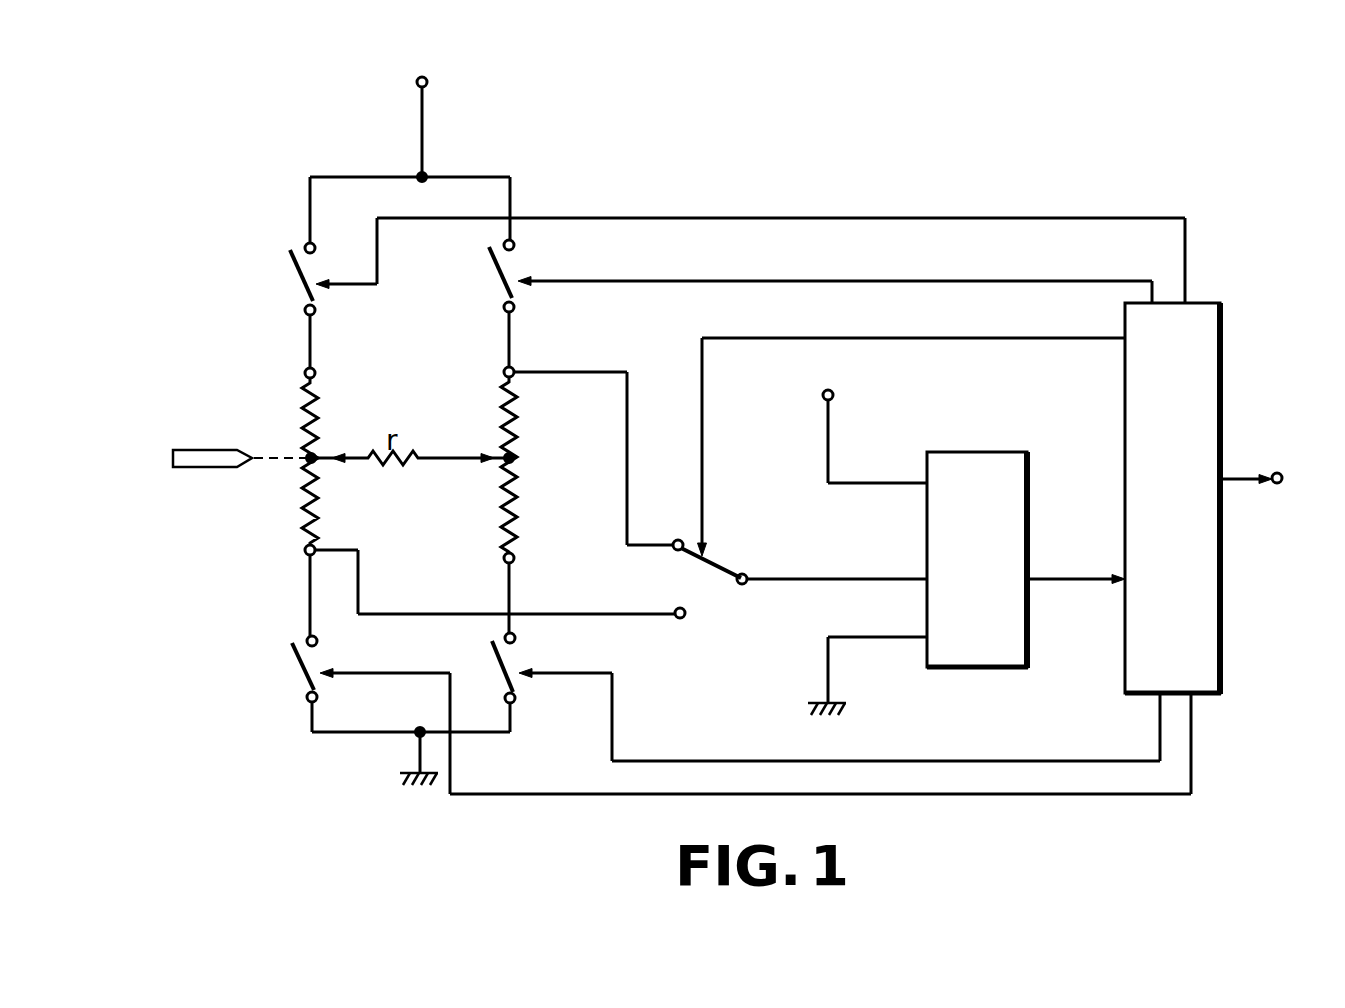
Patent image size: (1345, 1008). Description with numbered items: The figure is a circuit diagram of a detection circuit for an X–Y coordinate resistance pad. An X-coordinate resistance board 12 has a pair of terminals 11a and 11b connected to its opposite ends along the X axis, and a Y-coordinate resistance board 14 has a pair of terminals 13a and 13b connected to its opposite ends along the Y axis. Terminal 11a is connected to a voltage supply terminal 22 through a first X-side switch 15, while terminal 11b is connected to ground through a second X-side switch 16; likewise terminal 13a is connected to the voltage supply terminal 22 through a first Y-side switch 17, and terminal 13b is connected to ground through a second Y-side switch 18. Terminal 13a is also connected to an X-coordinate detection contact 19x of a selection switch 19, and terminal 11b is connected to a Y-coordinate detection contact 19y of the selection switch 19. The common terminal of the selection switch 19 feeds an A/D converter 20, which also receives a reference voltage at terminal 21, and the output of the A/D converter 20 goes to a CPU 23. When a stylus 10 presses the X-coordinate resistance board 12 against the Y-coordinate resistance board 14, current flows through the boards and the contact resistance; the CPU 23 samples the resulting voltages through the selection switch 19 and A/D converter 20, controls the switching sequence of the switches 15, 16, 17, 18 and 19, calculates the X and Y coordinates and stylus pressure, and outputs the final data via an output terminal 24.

The stylus 10 is at (214, 449).
The terminal 11a is at (305, 373).
The terminal 11b is at (306, 553).
The X-coordinate resistance board 12 is at (305, 417).
The terminal 13a is at (514, 370).
The terminal 13b is at (515, 559).
The Y-coordinate resistance board 14 is at (514, 436).
The first X-side switch 15 is at (302, 282).
The second X-side switch 16 is at (297, 669).
The first Y-side switch 17 is at (512, 272).
The second Y-side switch 18 is at (513, 663).
The selection switch 19 is at (720, 566).
The X-coordinate detection contact 19x is at (671, 549).
The Y-coordinate detection contact 19y is at (681, 619).
The A/D converter 20 is at (963, 452).
The reference voltage terminal Vref 21 is at (823, 395).
The voltage supply terminal 22 is at (416, 82).
The CPU 23 is at (1210, 326).
The output terminal 24 is at (1293, 453).